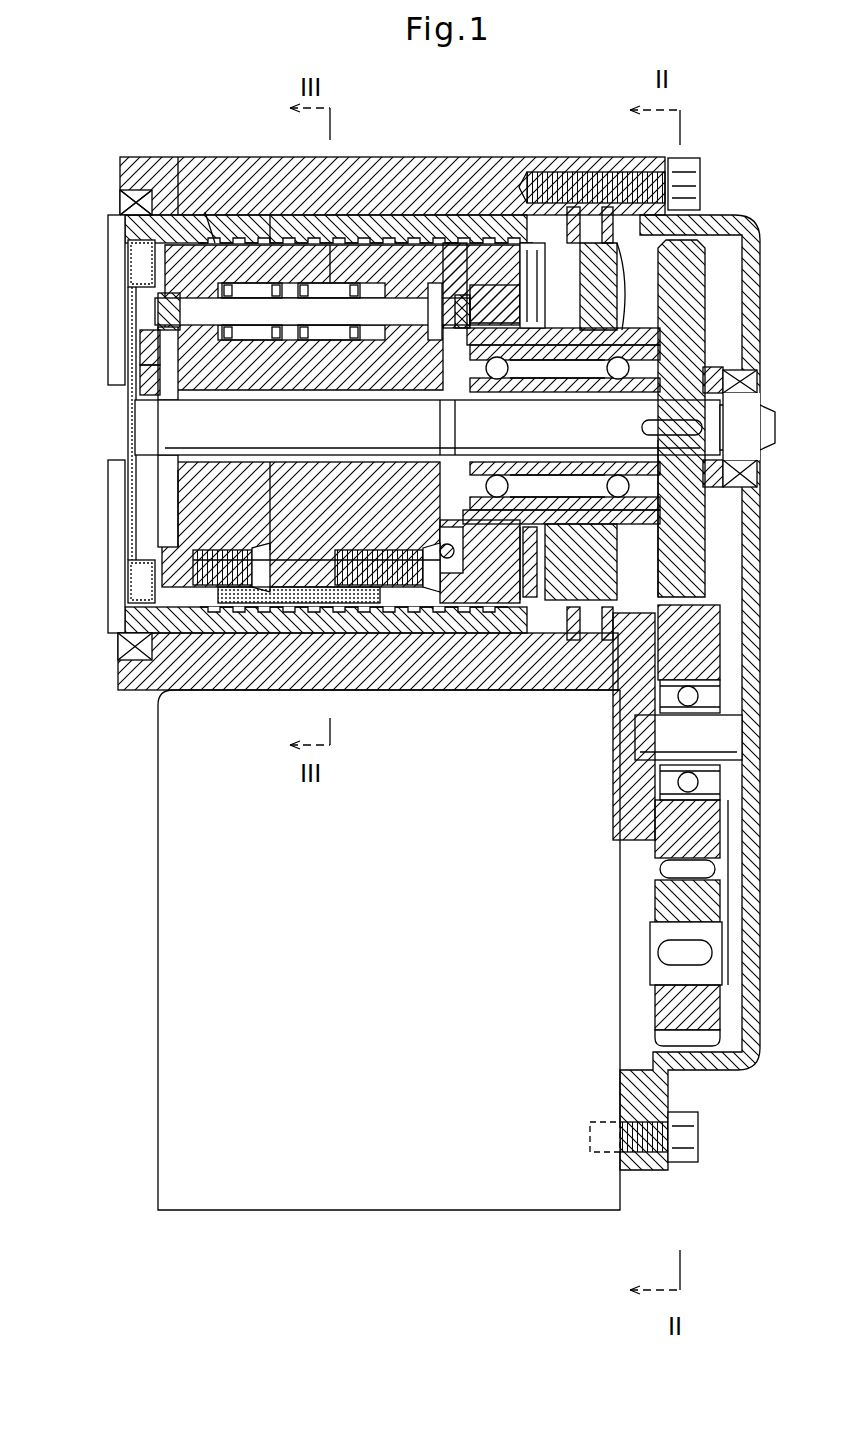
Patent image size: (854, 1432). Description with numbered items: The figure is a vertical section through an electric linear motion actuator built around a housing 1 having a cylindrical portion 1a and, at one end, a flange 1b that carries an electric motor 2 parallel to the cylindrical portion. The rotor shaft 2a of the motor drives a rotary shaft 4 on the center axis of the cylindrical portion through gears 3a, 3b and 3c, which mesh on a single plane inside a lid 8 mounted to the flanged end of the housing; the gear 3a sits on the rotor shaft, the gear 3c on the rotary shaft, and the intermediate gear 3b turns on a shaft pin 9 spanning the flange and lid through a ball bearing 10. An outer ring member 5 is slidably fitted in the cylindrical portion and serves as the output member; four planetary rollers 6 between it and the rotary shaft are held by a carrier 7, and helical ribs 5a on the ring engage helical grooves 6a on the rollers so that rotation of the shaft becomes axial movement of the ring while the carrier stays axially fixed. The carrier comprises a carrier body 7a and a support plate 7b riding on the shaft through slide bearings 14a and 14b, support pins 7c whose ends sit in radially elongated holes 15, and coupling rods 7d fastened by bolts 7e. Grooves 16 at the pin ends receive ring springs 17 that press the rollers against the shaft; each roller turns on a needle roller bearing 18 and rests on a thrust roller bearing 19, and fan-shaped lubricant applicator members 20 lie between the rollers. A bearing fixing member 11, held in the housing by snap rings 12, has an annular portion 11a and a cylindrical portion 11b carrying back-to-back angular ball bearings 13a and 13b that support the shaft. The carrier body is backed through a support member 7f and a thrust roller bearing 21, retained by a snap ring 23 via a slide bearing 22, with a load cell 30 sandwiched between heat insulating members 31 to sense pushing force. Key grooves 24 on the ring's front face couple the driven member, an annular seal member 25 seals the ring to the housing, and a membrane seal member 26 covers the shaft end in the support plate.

The housing 1 is at (132, 155).
The cylindrical portion 1a is at (122, 672).
The flange 1b is at (618, 800).
The electric motor 2 is at (185, 1085).
The rotor shaft 2a is at (705, 935).
The gear 3a is at (700, 1000).
The intermediate gear 3b is at (692, 626).
The gear 3c is at (692, 486).
The rotary shaft 4 is at (745, 430).
The outer ring member 5 is at (180, 160).
The helical ribs 5a is at (274, 215).
The planetary rollers 6 is at (240, 232).
The helical grooves 6a is at (206, 212).
The carrier 7 is at (382, 528).
The carrier body 7a is at (432, 618).
The support plate 7b is at (185, 508).
The support pins 7c is at (332, 318).
The coupling rods 7d is at (283, 552).
The bolts 7e is at (282, 605).
The support member 7f is at (465, 600).
The lid 8 is at (750, 870).
The shaft pin 9 is at (722, 740).
The ball bearing 10 is at (702, 692).
The bearing fixing member 11 is at (622, 298).
The annular portion 11a is at (680, 560).
The cylindrical portion 11b is at (522, 620).
The snap rings 12 is at (606, 232).
The angular ball bearing 13a is at (720, 380).
The angular ball bearing 13b is at (640, 340).
The slide bearing 14a is at (440, 455).
The slide bearing 14b is at (170, 448).
The radially elongated holes 15 is at (410, 298).
The grooves 16 is at (482, 300).
The ring spring 17 is at (434, 283).
The needle roller bearing 18 is at (262, 342).
The thrust roller bearing 19 is at (358, 342).
The lubricant applicator members 20 is at (222, 603).
The thrust roller bearing 21 is at (508, 260).
The slide bearing 22 is at (150, 360).
The snap ring 23 is at (150, 388).
The key grooves 24 is at (112, 222).
The annular seal member 25 is at (118, 198).
The seal member 26 is at (112, 480).
The load cell 30 is at (556, 255).
The heat insulating members 31 is at (604, 615).